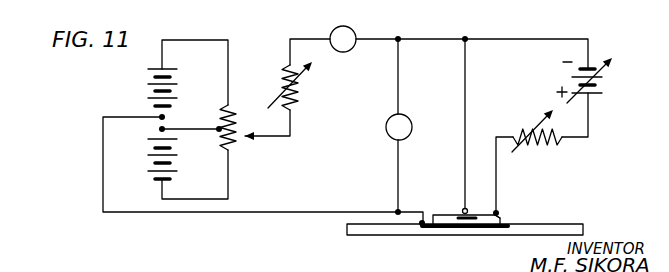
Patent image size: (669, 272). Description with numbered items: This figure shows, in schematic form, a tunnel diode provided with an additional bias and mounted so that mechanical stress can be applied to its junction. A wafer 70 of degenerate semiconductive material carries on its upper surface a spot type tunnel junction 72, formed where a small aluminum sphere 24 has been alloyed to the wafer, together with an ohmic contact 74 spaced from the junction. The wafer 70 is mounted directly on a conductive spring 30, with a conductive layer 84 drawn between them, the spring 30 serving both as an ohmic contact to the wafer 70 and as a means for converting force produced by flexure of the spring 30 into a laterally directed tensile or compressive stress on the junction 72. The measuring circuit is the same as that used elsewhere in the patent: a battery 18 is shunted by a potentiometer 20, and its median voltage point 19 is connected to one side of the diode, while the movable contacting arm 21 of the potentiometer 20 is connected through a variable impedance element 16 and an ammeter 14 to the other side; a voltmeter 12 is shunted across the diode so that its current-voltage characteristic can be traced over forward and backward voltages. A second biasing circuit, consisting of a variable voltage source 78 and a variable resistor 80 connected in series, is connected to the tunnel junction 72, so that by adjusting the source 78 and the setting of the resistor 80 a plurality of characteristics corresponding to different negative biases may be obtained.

The voltmeter 12 is at (386, 127).
The ammeter 14 is at (350, 51).
The variable impedance element 16 is at (280, 80).
The battery 18 is at (148, 76).
The median voltage point 19 is at (156, 131).
The potentiometer 20 is at (218, 112).
The movable contacting arm 21 is at (239, 138).
The aluminum sphere 24 is at (463, 208).
The conductive spring 30 is at (352, 235).
The wafer 70 is at (502, 222).
The spot type tunnel junction 72 is at (461, 215).
The ohmic contact 74 is at (501, 214).
The variable voltage source 78 is at (574, 76).
The variable resistor 80 is at (540, 143).
The electrode layer 84 is at (428, 231).